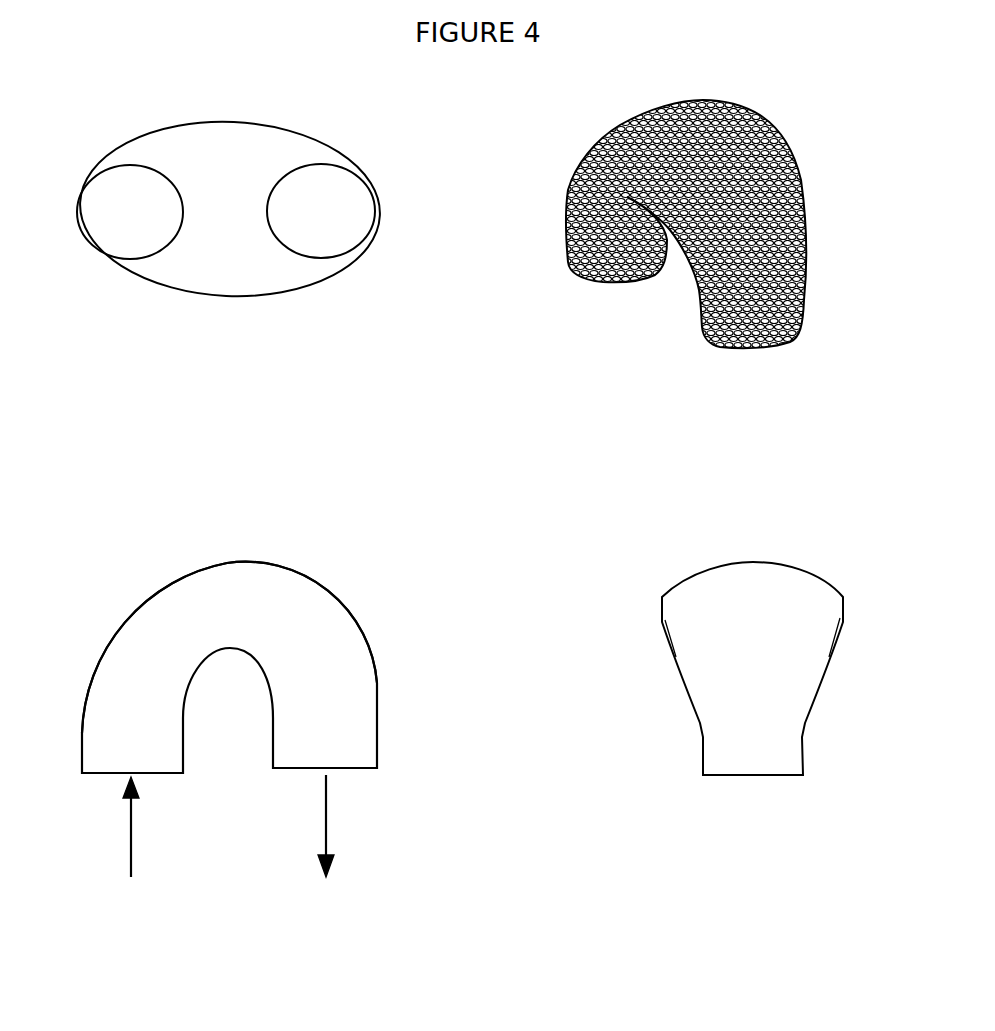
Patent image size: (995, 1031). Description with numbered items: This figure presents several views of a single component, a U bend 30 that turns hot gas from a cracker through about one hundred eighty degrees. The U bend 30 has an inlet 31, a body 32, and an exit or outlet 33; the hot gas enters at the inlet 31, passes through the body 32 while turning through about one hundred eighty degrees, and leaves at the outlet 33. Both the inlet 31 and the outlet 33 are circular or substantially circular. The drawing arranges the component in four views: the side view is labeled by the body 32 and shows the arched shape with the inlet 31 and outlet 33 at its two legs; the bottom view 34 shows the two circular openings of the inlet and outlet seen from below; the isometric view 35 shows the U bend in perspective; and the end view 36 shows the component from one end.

The U bend 30 is at (158, 627).
The inlet 31 is at (108, 836).
The body 32 is at (278, 588).
The exit or outlet 33 is at (357, 835).
The bottom view 34 is at (142, 155).
The isometric view 35 is at (603, 240).
The end view 36 is at (723, 608).